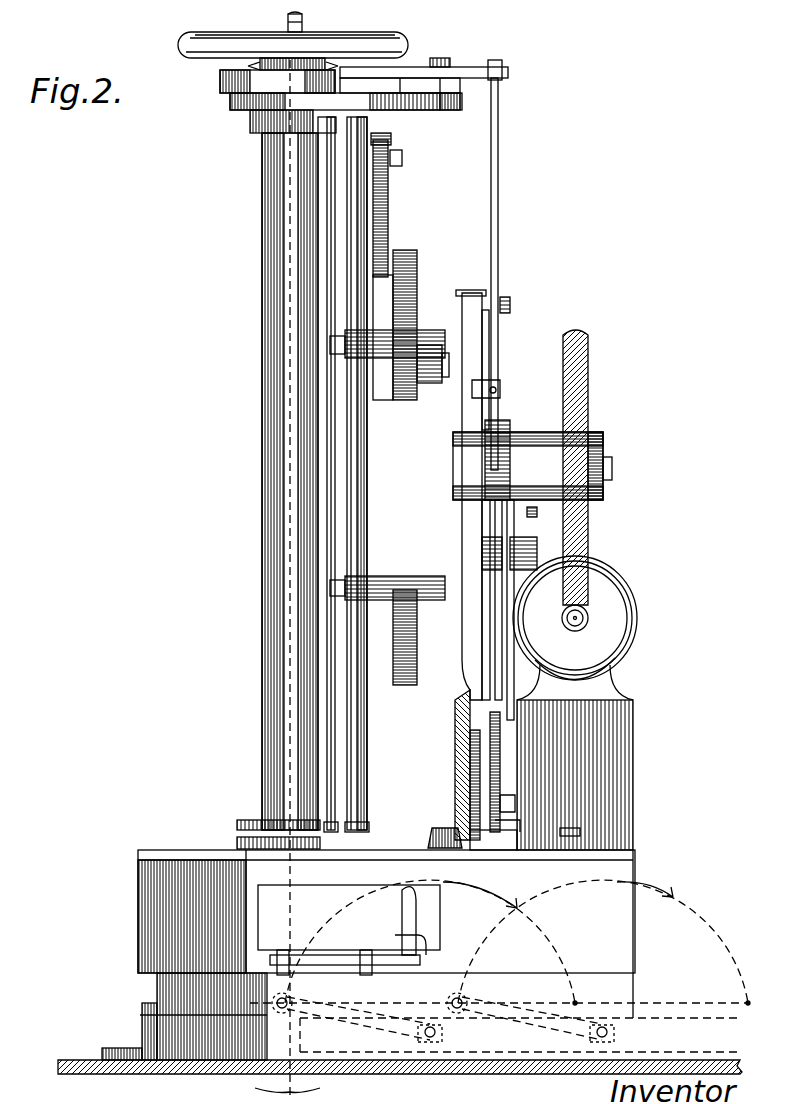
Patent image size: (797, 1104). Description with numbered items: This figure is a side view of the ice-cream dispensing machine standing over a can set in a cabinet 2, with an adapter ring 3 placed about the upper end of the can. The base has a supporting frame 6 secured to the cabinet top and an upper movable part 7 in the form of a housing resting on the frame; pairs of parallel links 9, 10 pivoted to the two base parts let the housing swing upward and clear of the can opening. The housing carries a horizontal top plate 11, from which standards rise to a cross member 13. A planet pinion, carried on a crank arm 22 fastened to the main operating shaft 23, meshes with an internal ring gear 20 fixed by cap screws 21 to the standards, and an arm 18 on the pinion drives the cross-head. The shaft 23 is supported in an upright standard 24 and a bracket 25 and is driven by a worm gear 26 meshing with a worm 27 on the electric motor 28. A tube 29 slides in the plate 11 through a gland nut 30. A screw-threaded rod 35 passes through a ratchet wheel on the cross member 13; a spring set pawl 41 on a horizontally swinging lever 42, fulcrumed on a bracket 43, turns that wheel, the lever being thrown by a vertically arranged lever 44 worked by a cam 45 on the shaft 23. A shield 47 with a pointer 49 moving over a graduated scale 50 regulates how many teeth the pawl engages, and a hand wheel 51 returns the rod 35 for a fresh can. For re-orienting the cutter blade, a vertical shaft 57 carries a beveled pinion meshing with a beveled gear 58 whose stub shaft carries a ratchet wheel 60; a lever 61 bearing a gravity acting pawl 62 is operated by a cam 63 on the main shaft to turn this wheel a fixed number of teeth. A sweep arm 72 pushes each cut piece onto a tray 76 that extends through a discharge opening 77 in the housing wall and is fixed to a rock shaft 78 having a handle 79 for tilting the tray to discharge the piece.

The cabinet 2 is at (78, 1060).
The adapter ring 3 is at (293, 54).
The supporting frame 6 is at (173, 1031).
The upper movable part 7 is at (150, 912).
The parallel link 9 is at (372, 1012).
The parallel link 10 is at (512, 1012).
The top plate 11 is at (180, 855).
The cross member 13 is at (263, 97).
The arm 18 is at (390, 204).
The internal ring gear 20 is at (405, 252).
The cap screw 21 is at (330, 346).
The crank arm 22 is at (428, 345).
The main operating shaft 23 is at (612, 466).
The upright standard 24 is at (462, 515).
The bracket 25 is at (537, 514).
The worm gear 26 is at (578, 330).
The worm 27 is at (585, 617).
The electric motor 28 is at (605, 592).
The tube 29 is at (270, 202).
The gland nut 30 is at (248, 826).
The screw-threaded rod 35 is at (288, 26).
The spring set pawl 41 is at (342, 72).
The horizontally swinging lever 42 is at (472, 70).
The bracket 43 is at (448, 108).
The vertically arranged lever 44 is at (496, 180).
The cam 45 is at (497, 405).
The shield 47 is at (232, 90).
The pointer 49 is at (222, 84).
The graduated scale 50 is at (252, 110).
The hand wheel 51 is at (195, 44).
The vertical shaft 57 is at (440, 828).
The beveled gear 58 is at (455, 740).
The ratchet wheel 60 is at (500, 722).
The lever 61 is at (506, 585).
The gravity acting pawl 62 is at (502, 805).
The cam 63 is at (505, 430).
The sweep arm 72 is at (352, 145).
The tray 76 is at (415, 940).
The discharge opening 77 is at (517, 935).
The rock shaft 78 is at (328, 965).
The handle 79 is at (416, 915).